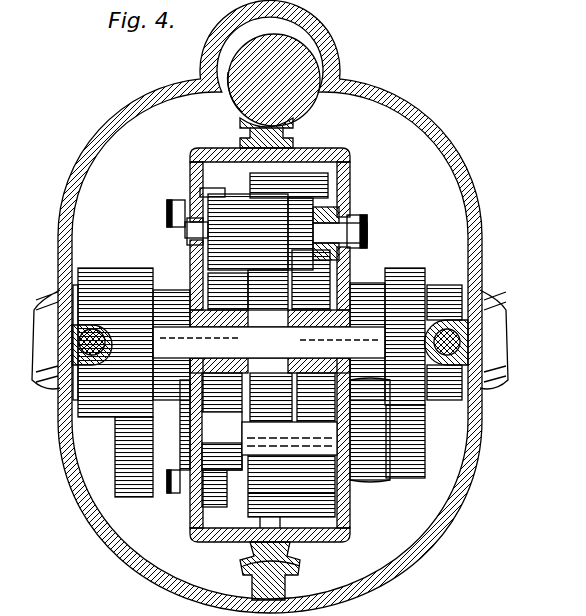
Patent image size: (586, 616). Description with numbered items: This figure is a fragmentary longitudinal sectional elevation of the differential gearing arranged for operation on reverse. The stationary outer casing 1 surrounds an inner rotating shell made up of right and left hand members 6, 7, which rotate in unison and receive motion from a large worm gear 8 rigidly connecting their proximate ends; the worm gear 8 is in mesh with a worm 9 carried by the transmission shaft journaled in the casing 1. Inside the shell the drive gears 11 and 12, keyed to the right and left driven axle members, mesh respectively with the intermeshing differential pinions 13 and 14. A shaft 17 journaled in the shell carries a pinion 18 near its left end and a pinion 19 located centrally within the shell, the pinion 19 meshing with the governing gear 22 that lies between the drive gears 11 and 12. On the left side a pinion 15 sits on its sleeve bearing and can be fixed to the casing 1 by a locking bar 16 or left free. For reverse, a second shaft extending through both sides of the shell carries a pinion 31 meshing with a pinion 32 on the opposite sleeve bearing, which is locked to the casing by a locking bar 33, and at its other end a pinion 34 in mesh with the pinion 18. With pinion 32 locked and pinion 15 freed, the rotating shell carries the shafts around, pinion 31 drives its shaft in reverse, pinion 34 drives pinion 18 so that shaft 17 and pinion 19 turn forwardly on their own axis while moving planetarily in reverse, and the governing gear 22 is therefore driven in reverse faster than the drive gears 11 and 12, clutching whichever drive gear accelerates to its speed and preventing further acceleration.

The stationary outer casing 1 is at (86, 154).
The right hand inner shell member 6 is at (190, 166).
The left hand inner shell member 7 is at (350, 180).
The worm gear 8 is at (241, 124).
The worm 9 is at (240, 72).
The right hand drive gear 11 is at (222, 292).
The left hand drive gear 12 is at (322, 292).
The differential pinion 13 is at (212, 208).
The differential pinion 14 is at (302, 178).
The pinion 15 is at (437, 290).
The locking bar 16 is at (470, 345).
The shaft 17 is at (269, 342).
The pinion 18 is at (405, 272).
The pinion 19 is at (277, 381).
The governing gear 22 is at (248, 410).
The pinion 31 is at (128, 498).
The pinion 32 is at (114, 269).
The locking bar 33 is at (76, 345).
The pinion 34 is at (418, 480).